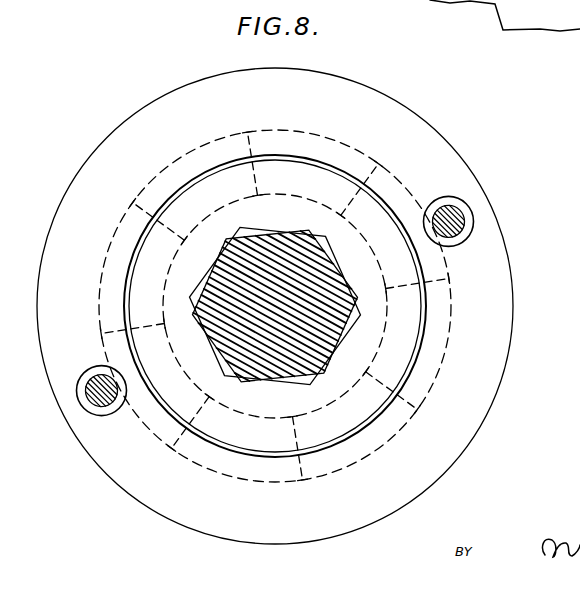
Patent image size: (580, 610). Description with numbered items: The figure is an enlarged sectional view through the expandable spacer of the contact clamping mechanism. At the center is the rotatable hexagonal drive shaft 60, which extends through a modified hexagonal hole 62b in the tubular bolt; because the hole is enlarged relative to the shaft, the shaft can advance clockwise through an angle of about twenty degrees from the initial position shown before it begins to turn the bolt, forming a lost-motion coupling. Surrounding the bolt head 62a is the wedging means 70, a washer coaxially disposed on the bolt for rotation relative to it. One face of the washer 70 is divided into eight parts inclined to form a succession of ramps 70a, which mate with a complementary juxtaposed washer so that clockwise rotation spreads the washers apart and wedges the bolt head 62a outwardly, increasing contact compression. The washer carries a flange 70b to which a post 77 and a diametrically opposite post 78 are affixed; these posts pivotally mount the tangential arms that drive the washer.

The drive shaft 60 is at (220, 325).
The bolt head 62a is at (333, 178).
The modified hexagonal hole 62b is at (243, 229).
The wedging means 70 is at (88, 155).
The ramps 70a is at (267, 132).
The washer flange 70b is at (498, 335).
The post 77 is at (90, 396).
The post 78 is at (457, 216).